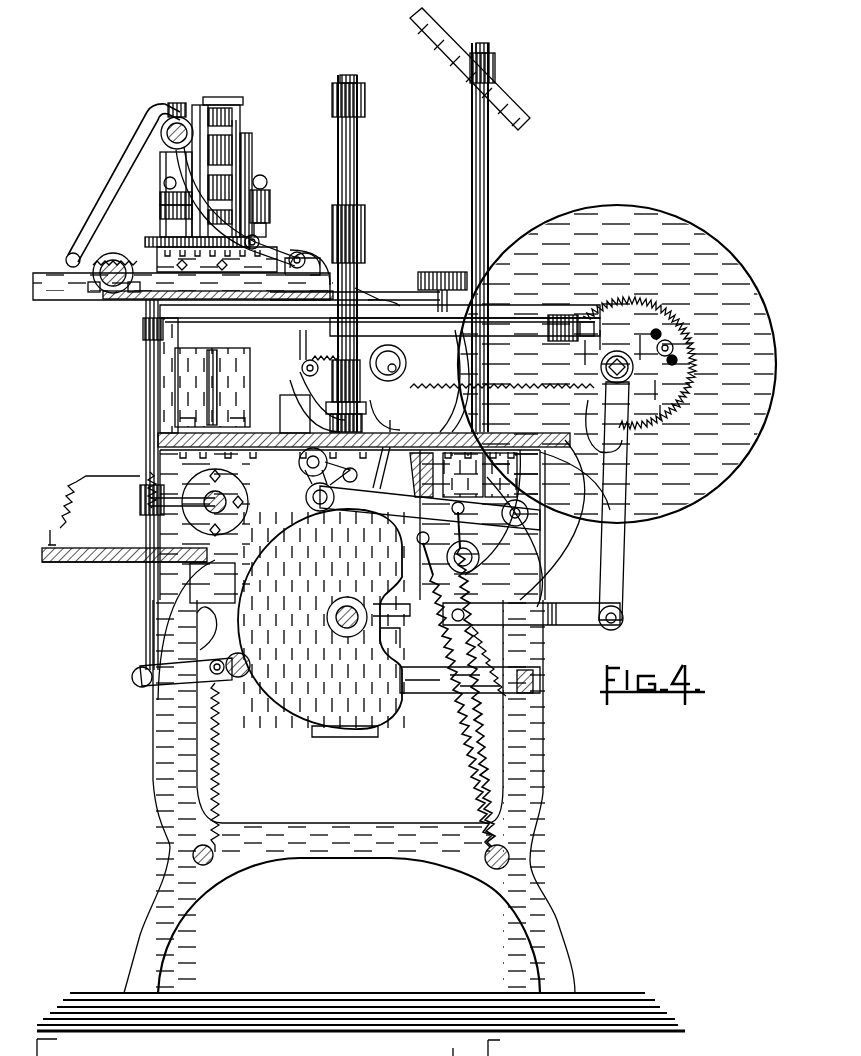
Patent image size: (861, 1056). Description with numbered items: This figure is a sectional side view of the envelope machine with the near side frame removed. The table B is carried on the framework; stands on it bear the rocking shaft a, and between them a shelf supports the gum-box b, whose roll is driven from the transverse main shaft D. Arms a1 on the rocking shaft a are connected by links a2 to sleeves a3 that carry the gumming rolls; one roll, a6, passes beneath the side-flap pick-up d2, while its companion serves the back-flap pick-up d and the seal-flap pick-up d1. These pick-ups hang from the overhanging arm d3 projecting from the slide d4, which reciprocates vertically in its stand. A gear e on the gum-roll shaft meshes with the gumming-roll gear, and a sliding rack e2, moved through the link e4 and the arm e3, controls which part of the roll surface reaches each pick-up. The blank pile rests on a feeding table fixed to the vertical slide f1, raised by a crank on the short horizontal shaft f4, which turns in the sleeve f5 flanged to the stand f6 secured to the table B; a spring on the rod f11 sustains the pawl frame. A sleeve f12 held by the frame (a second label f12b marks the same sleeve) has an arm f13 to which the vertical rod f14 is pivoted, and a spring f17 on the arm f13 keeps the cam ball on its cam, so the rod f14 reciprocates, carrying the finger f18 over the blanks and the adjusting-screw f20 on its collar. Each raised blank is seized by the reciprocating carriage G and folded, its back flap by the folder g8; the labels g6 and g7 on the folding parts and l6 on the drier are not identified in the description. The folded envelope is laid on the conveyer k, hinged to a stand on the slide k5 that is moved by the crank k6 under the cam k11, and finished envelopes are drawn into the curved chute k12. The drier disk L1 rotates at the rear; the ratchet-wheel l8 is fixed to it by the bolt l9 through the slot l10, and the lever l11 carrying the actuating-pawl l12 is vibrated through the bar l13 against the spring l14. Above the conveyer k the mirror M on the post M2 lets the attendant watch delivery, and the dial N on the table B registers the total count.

The table B is at (158, 440).
The gum-box b is at (175, 286).
The main shaft D is at (340, 625).
The disk L1 is at (617, 364).
The mirror M is at (377, 237).
The post M2 is at (487, 160).
The dial N is at (445, 262).
The reciprocating carriage G is at (365, 296).
The rocking shaft a is at (165, 139).
The arms a1 is at (172, 165).
The links a2 is at (258, 237).
The sleeves a3 is at (308, 262).
The gumming-roll a6 is at (314, 253).
The back-flap gummer or pick-up d is at (160, 222).
The seal-flap gummer or pick-up d1 is at (266, 230).
The side-flap gummer or pick-up d2 is at (252, 175).
The overhanging arm d3 is at (230, 117).
The slide d4 is at (240, 96).
The gear e is at (113, 253).
The sliding rack e2 is at (300, 252).
The arm e3 is at (166, 208).
The link e4 is at (195, 230).
The vertical slide f1 is at (190, 575).
The short horizontal shaft f4 is at (226, 498).
The sleeve f5 is at (228, 507).
The stand f6 is at (212, 387).
The rod f11 is at (238, 678).
The sleeve f12 is at (217, 675).
The spring arm f12b is at (140, 515).
The arm f13 is at (140, 690).
The vertical rod f14 is at (146, 368).
The spring f17 is at (222, 750).
The finger f18 is at (143, 330).
The adjusting-screw f20 is at (150, 467).
The pin g6 is at (302, 368).
The rod g7 is at (293, 345).
The folder g8 is at (330, 332).
The conveyer k is at (348, 385).
The slide k5 is at (385, 414).
The crank k6 is at (415, 488).
The cam k11 is at (405, 360).
The curved chute k12 is at (453, 381).
The ratchet bar l6 is at (532, 395).
The ratchet-wheel l8 is at (639, 363).
The bolt l9 is at (673, 348).
The slot l10 is at (664, 336).
The lever l11 is at (598, 566).
The actuating-pawl l12 is at (628, 436).
The bar l13 is at (531, 614).
The spring l14 is at (497, 660).